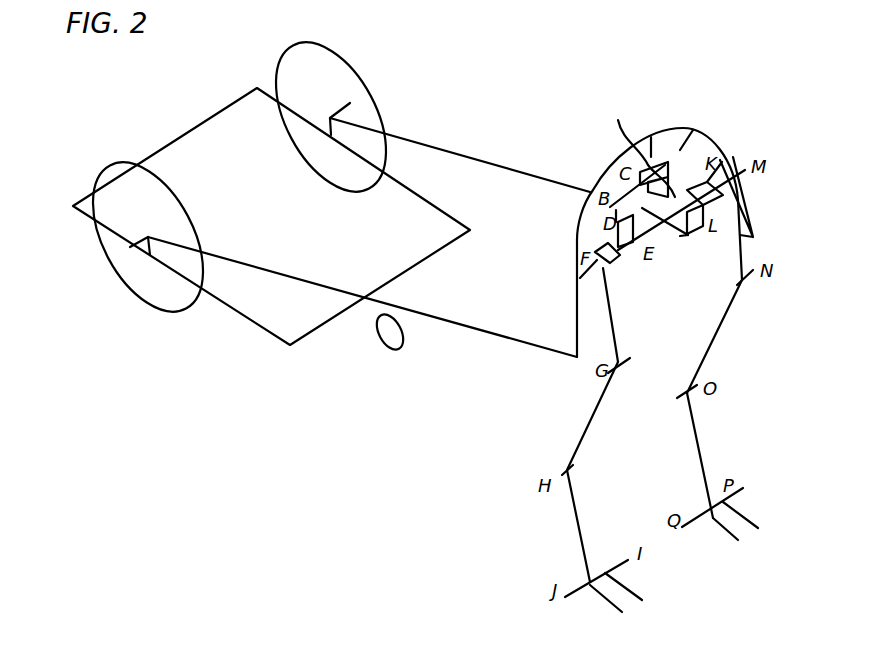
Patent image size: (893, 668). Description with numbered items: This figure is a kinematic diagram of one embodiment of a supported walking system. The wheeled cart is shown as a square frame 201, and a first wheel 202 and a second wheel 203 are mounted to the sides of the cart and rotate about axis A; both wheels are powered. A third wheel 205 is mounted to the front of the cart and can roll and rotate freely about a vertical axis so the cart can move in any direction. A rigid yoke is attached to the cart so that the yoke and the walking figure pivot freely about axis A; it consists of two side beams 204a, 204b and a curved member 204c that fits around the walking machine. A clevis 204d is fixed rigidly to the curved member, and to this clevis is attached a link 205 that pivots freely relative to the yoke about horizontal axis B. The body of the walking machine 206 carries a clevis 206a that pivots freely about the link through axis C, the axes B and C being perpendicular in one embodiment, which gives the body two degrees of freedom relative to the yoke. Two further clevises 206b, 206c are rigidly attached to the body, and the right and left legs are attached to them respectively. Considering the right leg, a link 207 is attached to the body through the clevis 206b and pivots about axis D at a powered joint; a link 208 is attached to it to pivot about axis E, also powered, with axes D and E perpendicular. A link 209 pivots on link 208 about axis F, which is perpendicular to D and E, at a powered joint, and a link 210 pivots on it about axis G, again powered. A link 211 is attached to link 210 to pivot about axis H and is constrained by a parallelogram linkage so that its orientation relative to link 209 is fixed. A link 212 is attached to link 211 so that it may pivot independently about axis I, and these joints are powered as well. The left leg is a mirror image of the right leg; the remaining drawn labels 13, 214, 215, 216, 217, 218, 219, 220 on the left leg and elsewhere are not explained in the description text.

The square frame 201 is at (252, 323).
The first wheel 202 is at (146, 314).
The second wheel 203 is at (329, 46).
The side beam 204a is at (478, 330).
The side beam 204b is at (456, 153).
The curved member 204c is at (693, 130).
The clevis 204d is at (636, 146).
The link 205 is at (398, 352).
The body of the walking machine 206 is at (663, 228).
The clevis 206a is at (672, 183).
The clevis 206b is at (625, 262).
The clevis 206c is at (680, 236).
The link 207 is at (632, 236).
The link 208 is at (604, 268).
The link 209 is at (618, 344).
The link 210 is at (592, 420).
The link 211 is at (580, 520).
The link 212 is at (625, 588).
The detector 13 is at (608, 600).
The beam splitter plate 214 is at (692, 212).
The mirror element 215 is at (716, 172).
The prism 216 is at (750, 256).
The optical path segment 217 is at (717, 332).
The optical path segment 218 is at (700, 452).
The polarizer element 219 is at (737, 510).
The detector 220 is at (723, 535).